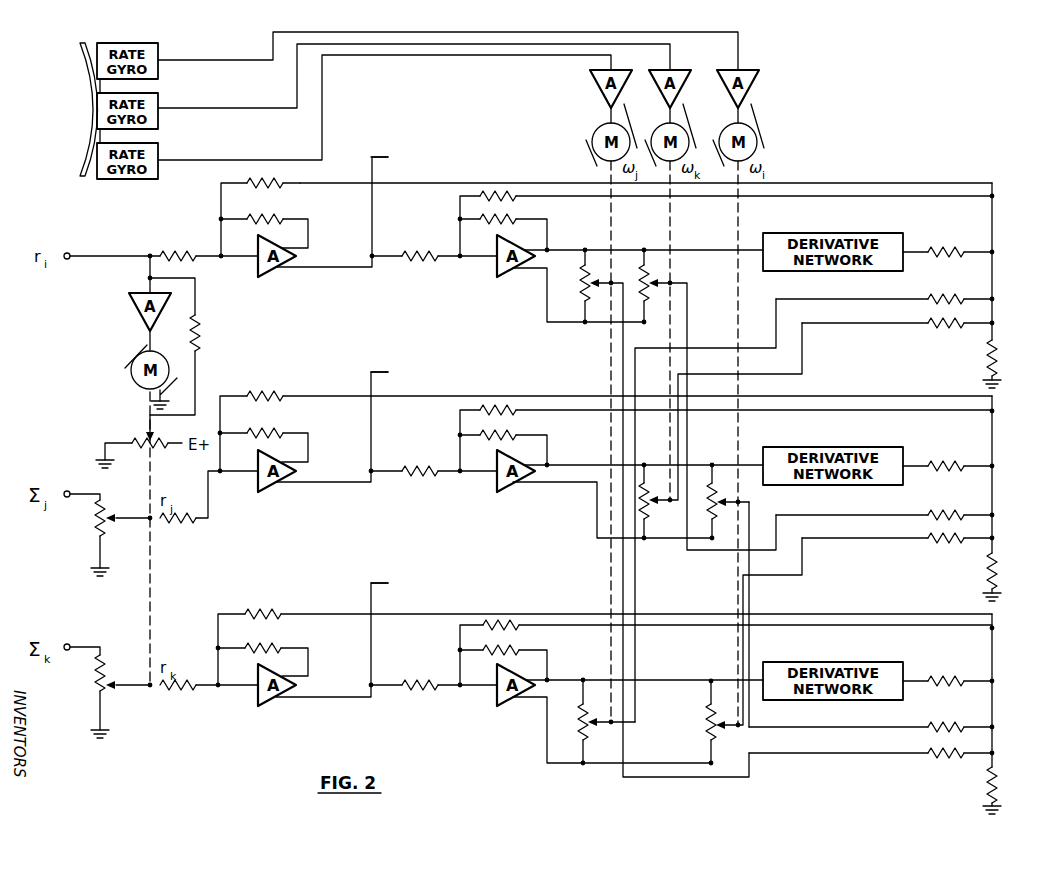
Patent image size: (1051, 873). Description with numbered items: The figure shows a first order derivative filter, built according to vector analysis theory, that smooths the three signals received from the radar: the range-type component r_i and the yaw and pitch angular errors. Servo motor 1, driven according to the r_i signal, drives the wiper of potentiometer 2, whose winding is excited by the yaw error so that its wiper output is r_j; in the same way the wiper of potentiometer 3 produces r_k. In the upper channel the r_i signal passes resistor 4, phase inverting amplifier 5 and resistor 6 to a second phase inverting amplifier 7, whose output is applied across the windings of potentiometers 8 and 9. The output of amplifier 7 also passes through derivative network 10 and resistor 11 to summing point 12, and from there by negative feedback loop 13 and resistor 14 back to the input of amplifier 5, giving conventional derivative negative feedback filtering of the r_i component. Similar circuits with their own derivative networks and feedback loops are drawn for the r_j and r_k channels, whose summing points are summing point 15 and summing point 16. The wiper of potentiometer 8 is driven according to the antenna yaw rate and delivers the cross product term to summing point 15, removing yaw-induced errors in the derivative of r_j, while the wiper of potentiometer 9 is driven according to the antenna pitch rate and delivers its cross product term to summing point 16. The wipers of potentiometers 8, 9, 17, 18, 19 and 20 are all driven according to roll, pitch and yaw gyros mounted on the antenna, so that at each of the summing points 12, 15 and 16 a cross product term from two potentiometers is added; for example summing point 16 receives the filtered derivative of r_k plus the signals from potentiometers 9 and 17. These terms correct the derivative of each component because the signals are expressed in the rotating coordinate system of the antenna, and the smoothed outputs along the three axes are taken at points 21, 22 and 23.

The servo motor 1 is at (105, 365).
The potentiometer 2 is at (100, 524).
The potentiometer 3 is at (100, 697).
The resistor 4 is at (190, 252).
The phase inverting amplifier 5 is at (268, 264).
The resistor 6 is at (440, 262).
The second phase inverting amplifier 7 is at (512, 270).
The potentiometer 8 is at (646, 280).
The potentiometer 9 is at (583, 293).
The derivative network 10 is at (878, 240).
The resistor 11 is at (945, 247).
The summing point 12 is at (996, 232).
The negative feedback loop 13 is at (907, 183).
The resistor 14 is at (284, 184).
The summing point 15 is at (996, 455).
The summing point 16 is at (996, 697).
The potentiometer 17 is at (715, 488).
The potentiometer 18 is at (650, 515).
The potentiometer 19 is at (714, 740).
The potentiometer 20 is at (585, 718).
The output point 21 is at (392, 158).
The output point 22 is at (392, 373).
The output point 23 is at (392, 583).